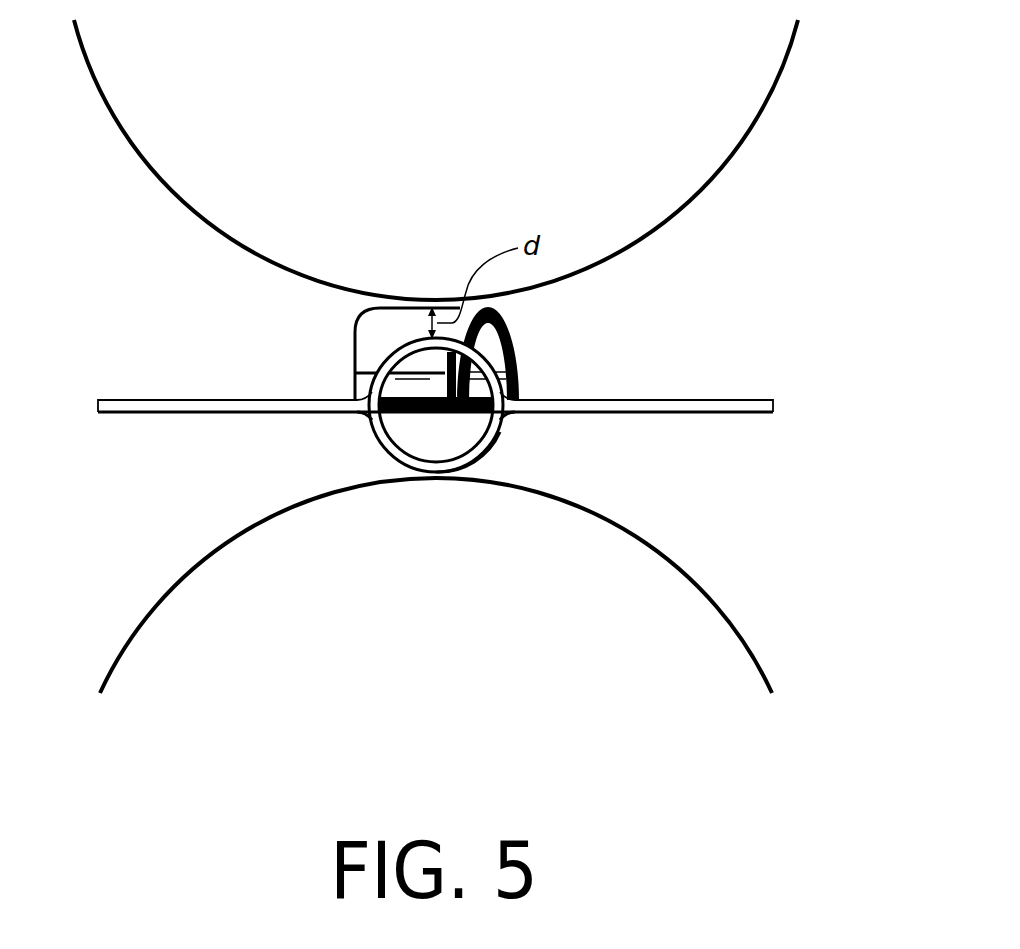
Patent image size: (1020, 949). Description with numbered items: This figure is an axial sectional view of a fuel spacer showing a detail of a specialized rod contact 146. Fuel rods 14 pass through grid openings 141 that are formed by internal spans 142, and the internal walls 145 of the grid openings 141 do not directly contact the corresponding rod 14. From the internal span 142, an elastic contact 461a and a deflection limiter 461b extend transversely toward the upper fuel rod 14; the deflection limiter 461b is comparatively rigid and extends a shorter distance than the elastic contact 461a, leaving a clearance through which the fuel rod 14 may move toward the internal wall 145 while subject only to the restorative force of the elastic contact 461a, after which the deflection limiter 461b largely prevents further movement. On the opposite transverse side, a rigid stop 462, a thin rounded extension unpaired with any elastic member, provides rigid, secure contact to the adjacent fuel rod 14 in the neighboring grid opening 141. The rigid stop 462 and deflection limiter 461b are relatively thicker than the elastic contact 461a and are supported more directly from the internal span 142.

The fuel rod 14 is at (712, 183).
The grid opening 141 is at (409, 416).
The internal span 142 is at (305, 401).
The internal wall 145 is at (160, 414).
The specialized rod contact 146 is at (607, 384).
The elastic contact 461a is at (382, 335).
The deflection limiter 461b is at (368, 386).
The rigid stop 462 is at (482, 445).